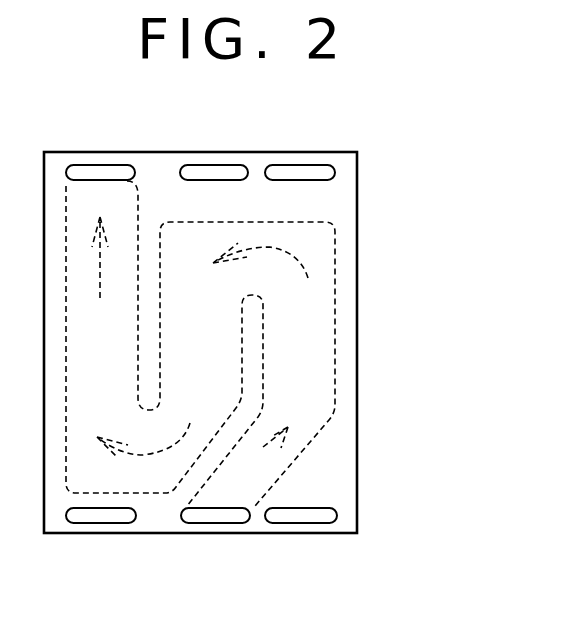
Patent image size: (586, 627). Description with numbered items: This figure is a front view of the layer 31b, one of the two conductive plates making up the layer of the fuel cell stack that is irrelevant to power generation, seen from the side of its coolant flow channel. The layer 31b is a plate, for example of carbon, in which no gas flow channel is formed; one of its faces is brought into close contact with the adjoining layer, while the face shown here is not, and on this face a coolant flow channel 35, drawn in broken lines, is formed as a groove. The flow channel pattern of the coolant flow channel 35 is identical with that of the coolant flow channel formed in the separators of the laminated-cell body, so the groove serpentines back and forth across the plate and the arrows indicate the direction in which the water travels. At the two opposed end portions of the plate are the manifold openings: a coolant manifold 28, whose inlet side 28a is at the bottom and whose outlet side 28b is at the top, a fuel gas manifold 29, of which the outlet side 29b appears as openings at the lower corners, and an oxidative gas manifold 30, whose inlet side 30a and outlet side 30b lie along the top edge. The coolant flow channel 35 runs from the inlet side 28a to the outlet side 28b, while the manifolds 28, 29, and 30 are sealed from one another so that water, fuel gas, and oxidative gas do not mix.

The coolant manifold 28 is at (163, 344).
The coolant manifold inlet side 28a is at (212, 515).
The coolant manifold outlet side 28b is at (95, 170).
The fuel gas manifold 29 is at (271, 543).
The fuel gas manifold outlet side 29b is at (95, 518).
The oxidative gas manifold 30 is at (293, 145).
The oxidative gas manifold inlet side 30a is at (213, 171).
The oxidative gas manifold outlet side 30b is at (318, 172).
The layer 31b is at (357, 207).
The coolant flow channel 35 is at (335, 277).